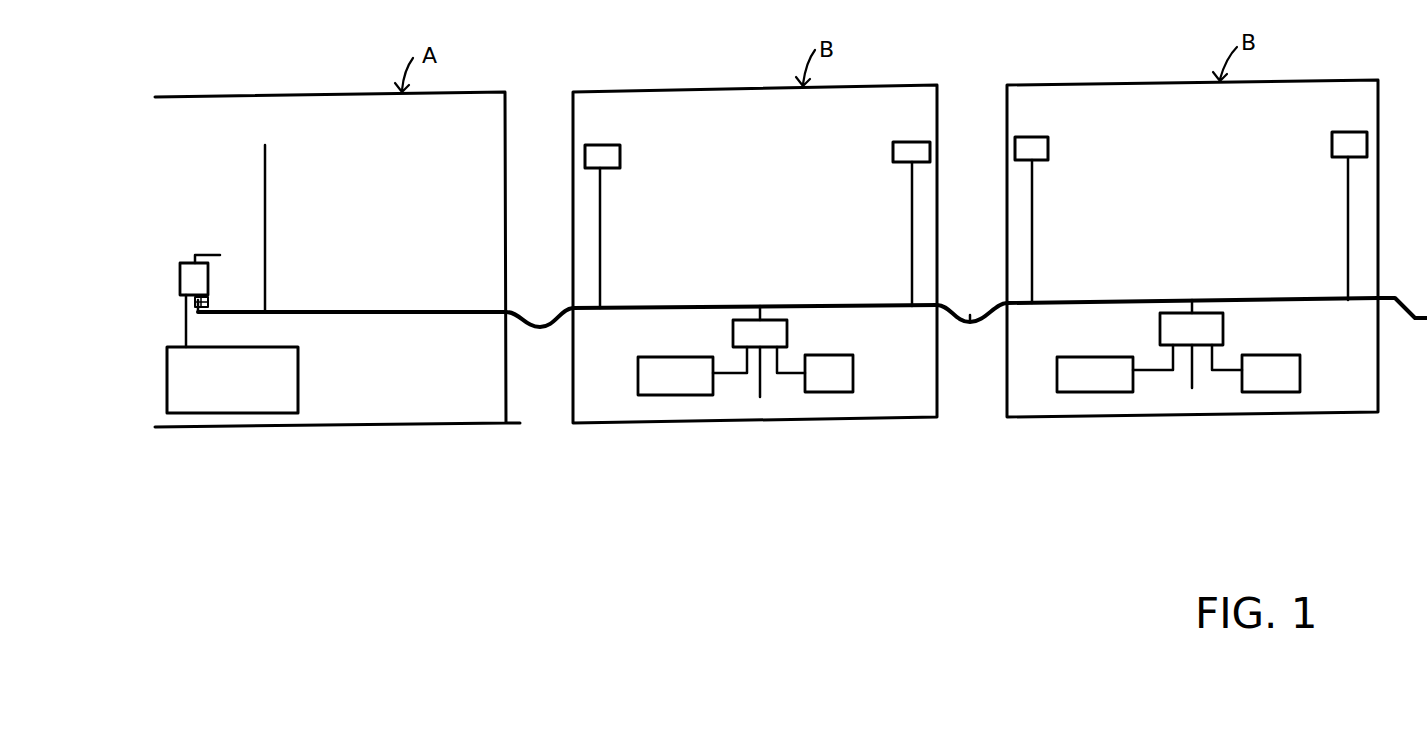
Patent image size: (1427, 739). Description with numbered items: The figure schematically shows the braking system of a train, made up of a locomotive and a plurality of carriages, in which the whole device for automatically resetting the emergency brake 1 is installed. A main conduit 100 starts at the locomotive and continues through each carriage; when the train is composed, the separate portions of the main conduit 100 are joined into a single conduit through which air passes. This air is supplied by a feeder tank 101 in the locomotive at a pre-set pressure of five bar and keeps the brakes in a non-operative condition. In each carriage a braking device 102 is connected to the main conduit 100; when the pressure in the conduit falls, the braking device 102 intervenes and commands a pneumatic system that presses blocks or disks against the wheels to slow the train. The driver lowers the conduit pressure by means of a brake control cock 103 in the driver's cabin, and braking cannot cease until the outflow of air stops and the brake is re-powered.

The device for automatically resetting the emergency brake 1 is at (598, 155).
The main conduit 100 is at (587, 480).
The feeder tank 101 is at (210, 392).
The braking device 102 is at (748, 330).
The brake control cock 103 is at (193, 272).